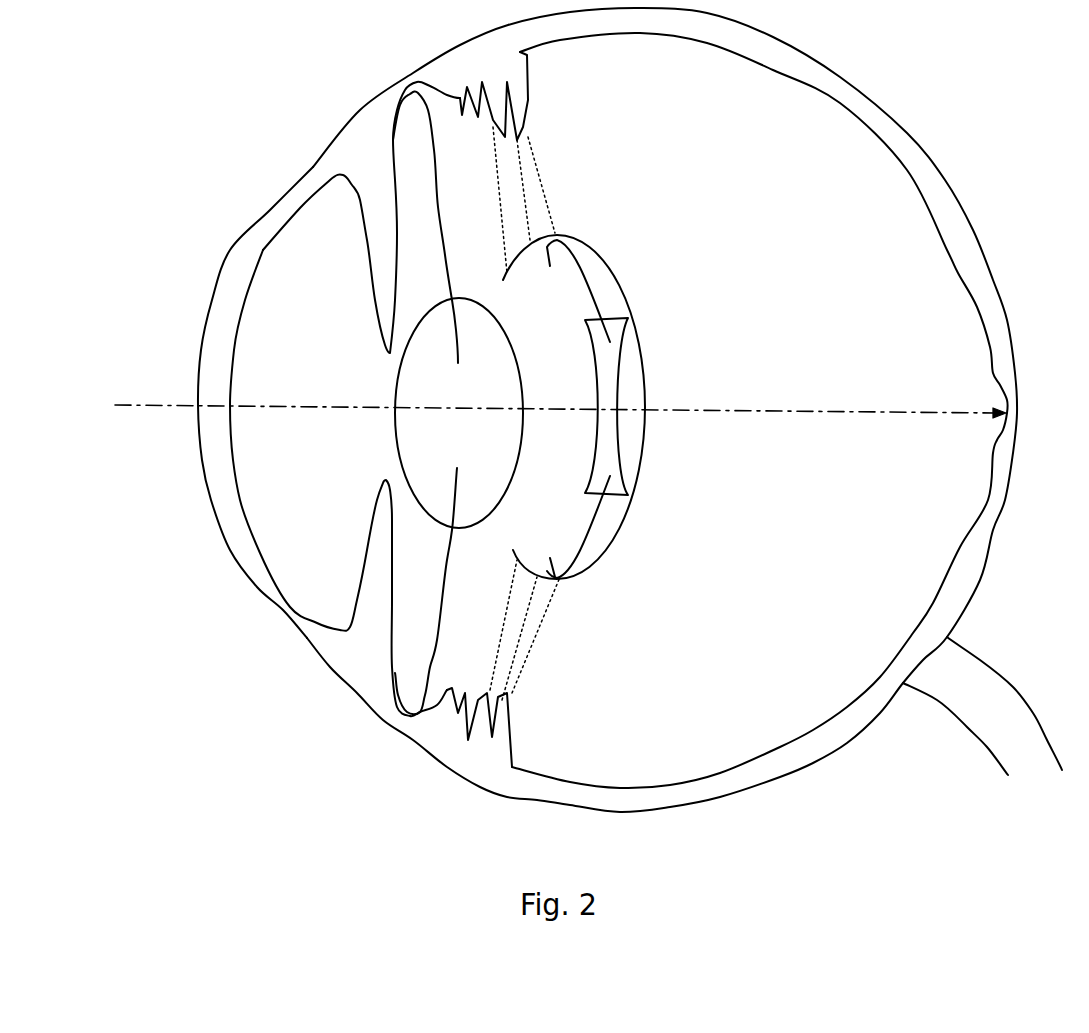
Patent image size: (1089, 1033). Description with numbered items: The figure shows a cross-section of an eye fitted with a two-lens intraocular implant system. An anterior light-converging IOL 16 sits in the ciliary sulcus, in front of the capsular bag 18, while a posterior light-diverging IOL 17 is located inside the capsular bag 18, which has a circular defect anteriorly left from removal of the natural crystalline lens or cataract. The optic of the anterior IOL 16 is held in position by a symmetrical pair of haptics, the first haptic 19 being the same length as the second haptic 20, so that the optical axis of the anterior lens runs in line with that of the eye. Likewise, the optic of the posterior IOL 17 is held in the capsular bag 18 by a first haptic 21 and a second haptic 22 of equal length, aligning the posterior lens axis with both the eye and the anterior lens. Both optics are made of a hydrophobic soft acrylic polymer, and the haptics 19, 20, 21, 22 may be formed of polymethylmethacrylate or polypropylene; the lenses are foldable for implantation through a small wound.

The anterior light-converging IOL 16 is at (408, 441).
The posterior light-diverging IOL 17 is at (614, 457).
The capsular bag 18 is at (628, 547).
The first haptic 19 is at (421, 627).
The second haptic 20 is at (430, 211).
The first haptic 21 is at (600, 281).
The second haptic 22 is at (595, 558).